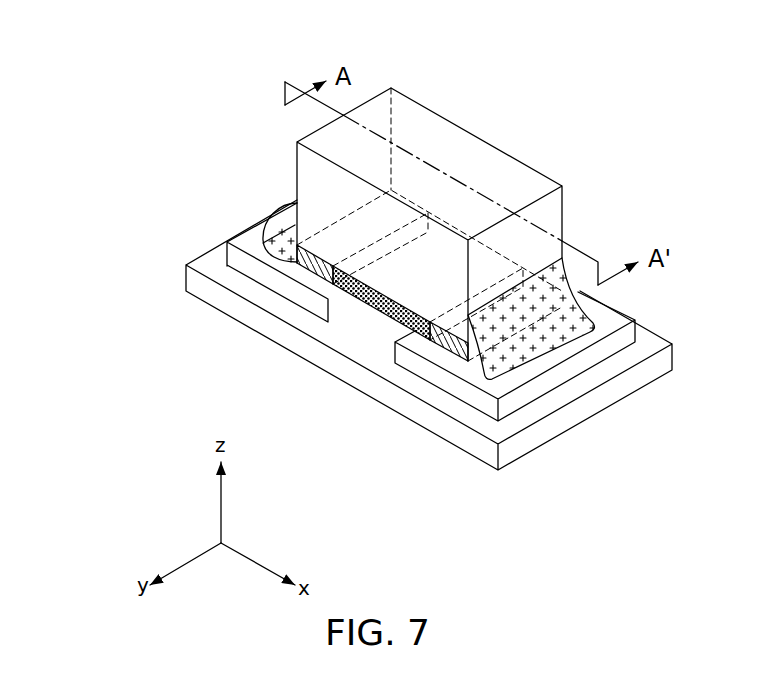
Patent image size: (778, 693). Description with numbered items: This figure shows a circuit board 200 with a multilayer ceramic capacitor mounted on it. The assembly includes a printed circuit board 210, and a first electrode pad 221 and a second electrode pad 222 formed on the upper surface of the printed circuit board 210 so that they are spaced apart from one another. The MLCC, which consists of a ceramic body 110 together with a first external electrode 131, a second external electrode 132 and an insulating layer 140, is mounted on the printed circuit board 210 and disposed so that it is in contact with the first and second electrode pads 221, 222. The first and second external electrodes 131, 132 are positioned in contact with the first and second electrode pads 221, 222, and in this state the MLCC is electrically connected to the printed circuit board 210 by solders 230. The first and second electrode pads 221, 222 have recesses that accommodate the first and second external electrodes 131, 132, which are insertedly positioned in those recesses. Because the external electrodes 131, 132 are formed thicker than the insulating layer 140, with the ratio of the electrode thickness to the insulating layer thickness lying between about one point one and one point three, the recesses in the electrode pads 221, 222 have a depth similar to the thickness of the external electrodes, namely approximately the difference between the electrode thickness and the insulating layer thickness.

The circuit board 200 is at (612, 106).
The ceramic body 110 is at (458, 143).
The first external electrode 131 is at (318, 262).
The second external electrode 132 is at (458, 345).
The insulating layer 140 is at (383, 302).
The printed circuit board 210 is at (452, 430).
The first electrode pad 221 is at (258, 240).
The second electrode pad 222 is at (513, 380).
The solders 230 is at (279, 258).